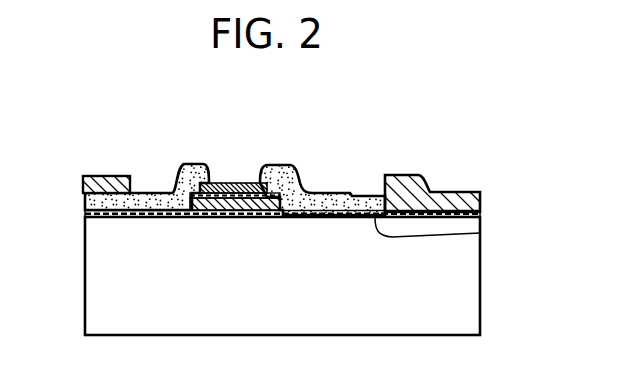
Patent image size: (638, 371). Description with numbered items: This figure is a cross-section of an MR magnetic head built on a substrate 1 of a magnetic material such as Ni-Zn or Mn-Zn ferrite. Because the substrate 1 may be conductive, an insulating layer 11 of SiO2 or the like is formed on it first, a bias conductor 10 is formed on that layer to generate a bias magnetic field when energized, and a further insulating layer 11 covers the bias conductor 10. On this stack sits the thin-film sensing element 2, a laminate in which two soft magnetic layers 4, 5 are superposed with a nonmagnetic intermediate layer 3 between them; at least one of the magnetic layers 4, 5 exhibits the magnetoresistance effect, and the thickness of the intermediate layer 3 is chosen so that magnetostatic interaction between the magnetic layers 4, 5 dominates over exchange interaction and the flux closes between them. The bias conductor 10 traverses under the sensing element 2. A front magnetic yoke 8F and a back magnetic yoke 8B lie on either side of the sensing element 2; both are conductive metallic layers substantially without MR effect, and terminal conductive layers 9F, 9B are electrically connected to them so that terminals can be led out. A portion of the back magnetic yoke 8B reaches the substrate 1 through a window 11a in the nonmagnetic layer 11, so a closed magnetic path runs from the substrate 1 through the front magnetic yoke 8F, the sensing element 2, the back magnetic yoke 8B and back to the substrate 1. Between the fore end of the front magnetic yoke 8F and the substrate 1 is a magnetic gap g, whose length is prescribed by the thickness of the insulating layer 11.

The substrate 1 is at (463, 315).
The thin-film sensing element 2 is at (233, 152).
The nonmagnetic intermediate layer 3 is at (232, 182).
The magnetic layer 4 is at (233, 177).
The magnetic layer 5 is at (221, 182).
The front magnetic yoke 8F is at (148, 195).
The back magnetic yoke 8B is at (358, 200).
The terminal conductive layer 9F is at (96, 180).
The terminal conductive layer 9B is at (458, 200).
The bias conductor 10 is at (208, 215).
The insulating layer 11 is at (276, 212).
The window 11a is at (480, 233).
The magnetic gap g is at (85, 218).